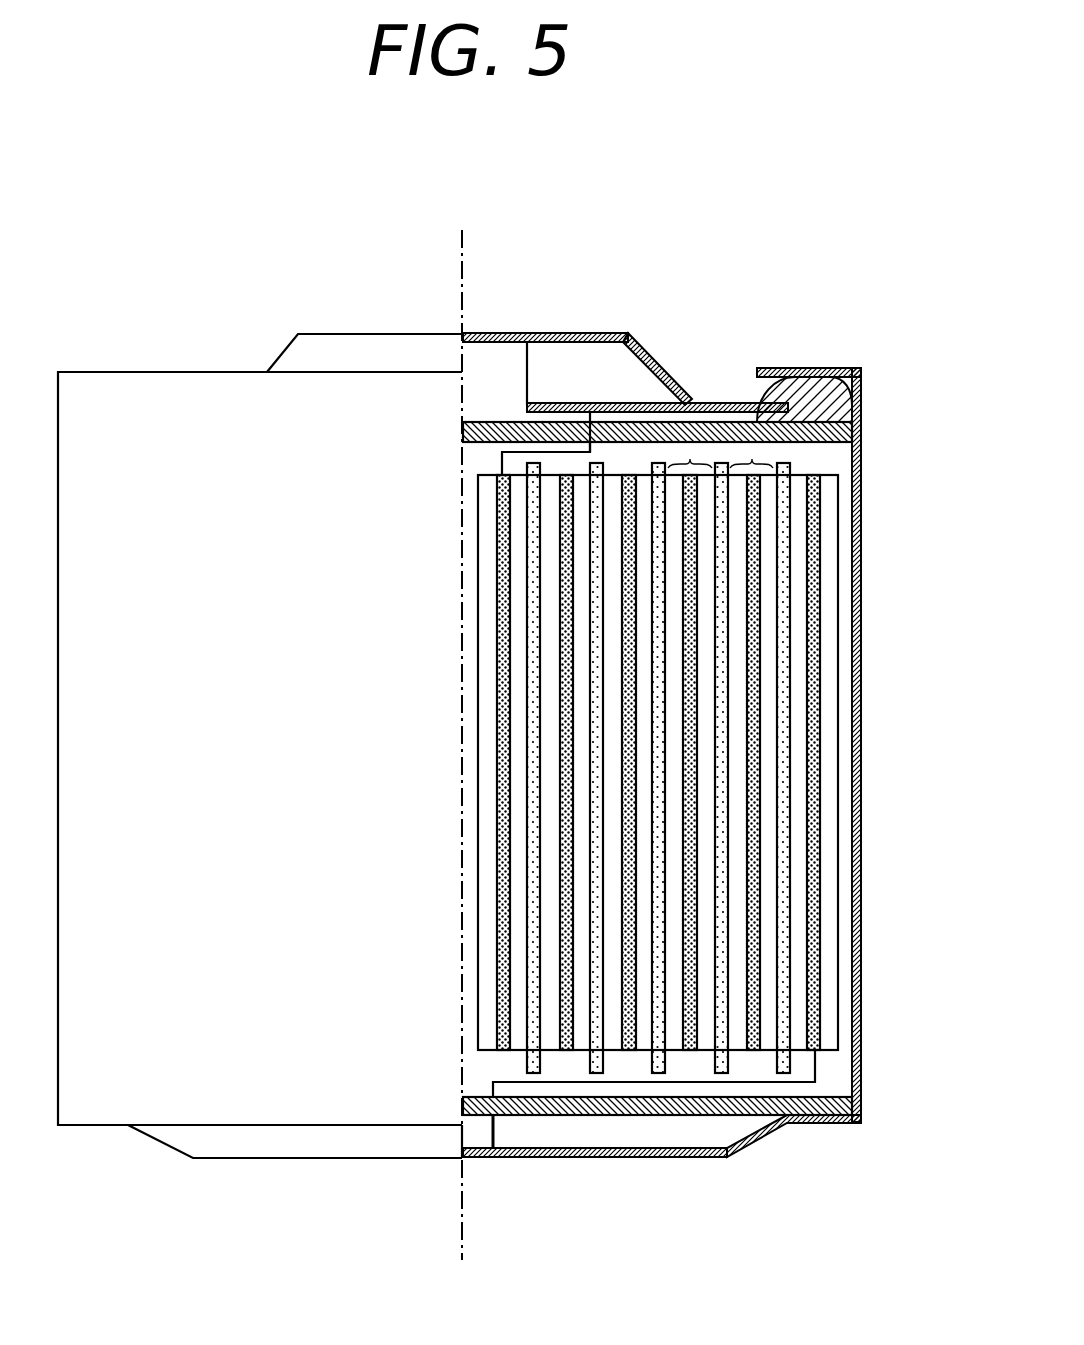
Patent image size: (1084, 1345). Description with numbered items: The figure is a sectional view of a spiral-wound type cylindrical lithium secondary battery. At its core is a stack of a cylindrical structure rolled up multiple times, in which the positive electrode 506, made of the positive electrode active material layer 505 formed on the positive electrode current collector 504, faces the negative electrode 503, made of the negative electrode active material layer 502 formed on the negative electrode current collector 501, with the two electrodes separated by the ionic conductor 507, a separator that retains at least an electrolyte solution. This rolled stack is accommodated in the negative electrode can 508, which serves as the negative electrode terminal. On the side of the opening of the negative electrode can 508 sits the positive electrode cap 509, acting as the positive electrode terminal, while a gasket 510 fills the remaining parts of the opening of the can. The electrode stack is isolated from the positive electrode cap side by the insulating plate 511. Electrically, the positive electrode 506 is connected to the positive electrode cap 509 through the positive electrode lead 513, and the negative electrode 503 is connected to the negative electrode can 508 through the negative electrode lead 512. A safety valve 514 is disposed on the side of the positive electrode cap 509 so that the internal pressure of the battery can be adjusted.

The negative electrode current collector 501 is at (698, 553).
The negative electrode active material layer 502 is at (703, 665).
The negative electrode 503 is at (690, 459).
The positive electrode current collector 504 is at (758, 803).
The positive electrode active material layer 505 is at (768, 877).
The positive electrode 506 is at (752, 459).
The ionic conductor 507 is at (728, 735).
The negative electrode can 508 is at (517, 1157).
The positive electrode cap 509 is at (482, 333).
The gasket 510 is at (808, 377).
The insulating plate 511 is at (862, 423).
The negative electrode lead 512 is at (497, 1128).
The positive electrode lead 513 is at (500, 455).
The safety valve 514 is at (508, 353).